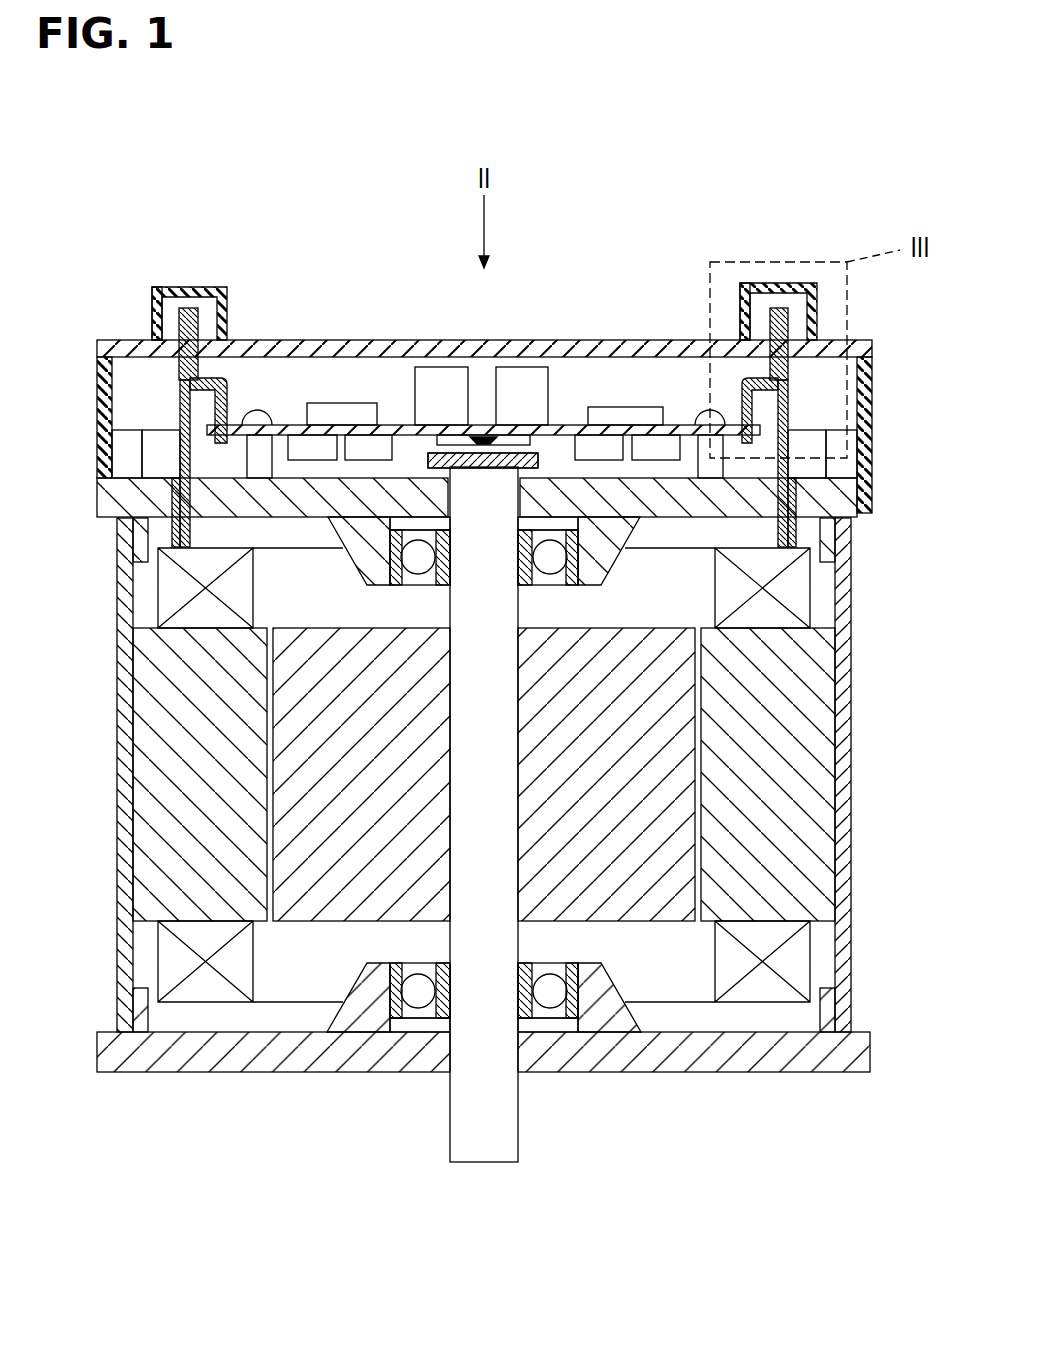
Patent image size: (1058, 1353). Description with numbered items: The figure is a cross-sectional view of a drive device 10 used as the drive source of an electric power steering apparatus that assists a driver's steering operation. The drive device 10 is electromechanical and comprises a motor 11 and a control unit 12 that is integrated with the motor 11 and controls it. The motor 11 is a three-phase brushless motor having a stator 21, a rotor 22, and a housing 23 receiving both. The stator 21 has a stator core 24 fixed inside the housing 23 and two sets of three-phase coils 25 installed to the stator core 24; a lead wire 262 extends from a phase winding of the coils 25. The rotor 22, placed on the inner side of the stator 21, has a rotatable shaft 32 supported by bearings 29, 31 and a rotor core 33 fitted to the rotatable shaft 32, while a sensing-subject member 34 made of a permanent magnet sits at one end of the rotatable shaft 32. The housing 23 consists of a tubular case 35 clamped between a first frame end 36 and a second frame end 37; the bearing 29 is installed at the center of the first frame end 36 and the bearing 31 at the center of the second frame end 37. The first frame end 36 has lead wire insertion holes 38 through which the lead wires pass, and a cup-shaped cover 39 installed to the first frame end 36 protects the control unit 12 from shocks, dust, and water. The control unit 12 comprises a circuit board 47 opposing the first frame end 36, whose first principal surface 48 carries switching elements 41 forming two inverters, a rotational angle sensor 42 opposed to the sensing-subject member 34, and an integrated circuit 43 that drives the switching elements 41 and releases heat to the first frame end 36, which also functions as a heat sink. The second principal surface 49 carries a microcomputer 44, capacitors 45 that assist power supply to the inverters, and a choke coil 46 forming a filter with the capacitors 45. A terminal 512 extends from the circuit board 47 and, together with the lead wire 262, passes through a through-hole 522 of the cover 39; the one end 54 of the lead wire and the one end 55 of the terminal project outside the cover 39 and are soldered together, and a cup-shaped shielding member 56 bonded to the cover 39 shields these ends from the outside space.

The drive device 10 is at (100, 290).
The motor 11 is at (92, 819).
The control unit 12 is at (277, 410).
The stator 21 is at (845, 860).
The rotor 22 is at (637, 928).
The housing 23 is at (106, 908).
The stator core 24 is at (793, 727).
The coils 25 is at (170, 607).
The bearing 29 is at (418, 560).
The bearing 31 is at (418, 995).
The rotatable shaft 32 is at (500, 1122).
The rotor core 33 is at (583, 898).
The sensing-subject member 34 is at (428, 462).
The case 35 is at (125, 747).
The first frame end 36 is at (105, 500).
The second frame end 37 is at (108, 1053).
The lead wire insertion holes 38 is at (172, 522).
The cover 39 is at (110, 358).
The switching elements 41 is at (317, 435).
The rotational angle sensor 42 is at (480, 437).
The integrated circuit 43 is at (535, 443).
The microcomputer 44 is at (345, 403).
The capacitors 45 is at (440, 367).
The choke coil 46 is at (621, 407).
The circuit board 47 is at (686, 425).
The first principal surface 48 is at (425, 455).
The second principal surface 49 is at (296, 425).
The one end of lead wire 54 is at (184, 308).
The one end of terminal 55 is at (192, 308).
The shielding member 56 is at (152, 302).
The lead wire 262 is at (172, 460).
The terminal 512 is at (215, 408).
The through-hole 522 is at (180, 325).